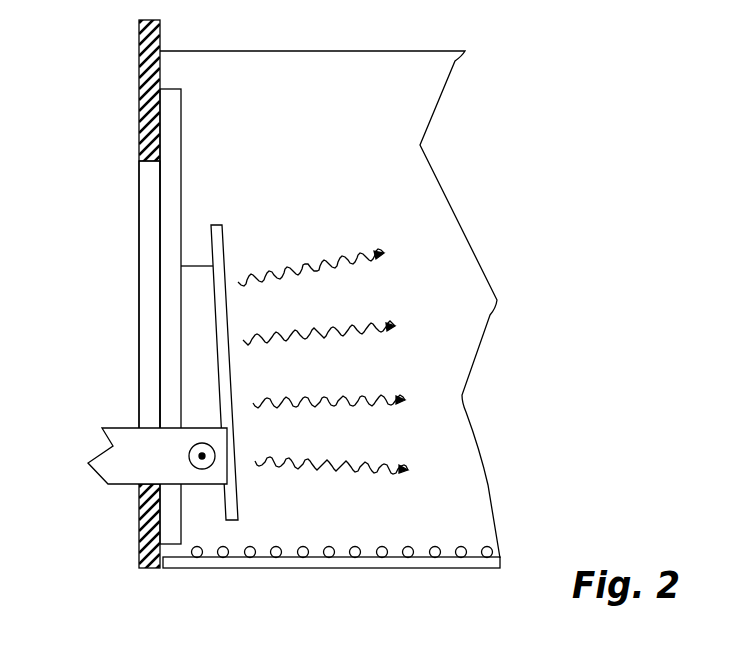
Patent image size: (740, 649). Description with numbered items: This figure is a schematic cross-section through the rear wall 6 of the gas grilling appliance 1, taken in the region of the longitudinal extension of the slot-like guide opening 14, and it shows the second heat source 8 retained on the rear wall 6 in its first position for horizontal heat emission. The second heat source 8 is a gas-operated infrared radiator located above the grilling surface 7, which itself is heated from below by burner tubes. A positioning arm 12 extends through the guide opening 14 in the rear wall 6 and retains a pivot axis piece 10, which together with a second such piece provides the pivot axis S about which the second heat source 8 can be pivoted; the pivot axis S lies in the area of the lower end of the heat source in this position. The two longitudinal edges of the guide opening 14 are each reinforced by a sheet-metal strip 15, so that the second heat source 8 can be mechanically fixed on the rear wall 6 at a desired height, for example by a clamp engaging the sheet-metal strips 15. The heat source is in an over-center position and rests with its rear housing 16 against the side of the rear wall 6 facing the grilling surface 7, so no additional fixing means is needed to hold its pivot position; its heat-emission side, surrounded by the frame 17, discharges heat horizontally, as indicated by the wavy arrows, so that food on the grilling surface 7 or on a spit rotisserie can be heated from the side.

The gas grilling appliance 1 is at (502, 178).
The rear wall 6 is at (139, 139).
The grilling surface 7 is at (407, 545).
The second heat source 8 is at (240, 248).
The pivot axis piece 10 is at (196, 446).
The positioning arm 12 is at (160, 469).
The guide opening 14 is at (150, 217).
The sheet-metal strip 15 is at (182, 141).
The rear housing 16 is at (193, 266).
The frame 17 is at (222, 224).
The pivot axis S is at (199, 459).